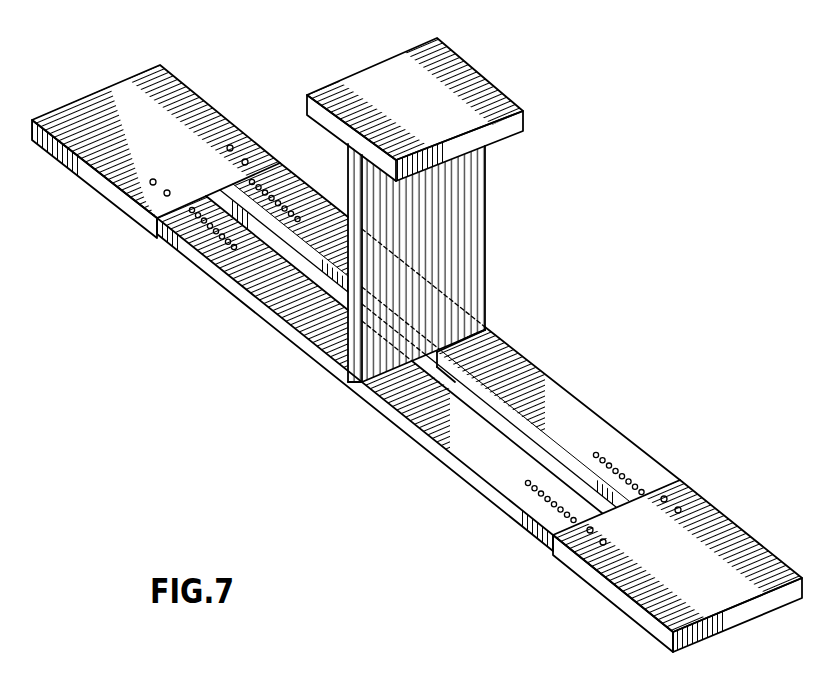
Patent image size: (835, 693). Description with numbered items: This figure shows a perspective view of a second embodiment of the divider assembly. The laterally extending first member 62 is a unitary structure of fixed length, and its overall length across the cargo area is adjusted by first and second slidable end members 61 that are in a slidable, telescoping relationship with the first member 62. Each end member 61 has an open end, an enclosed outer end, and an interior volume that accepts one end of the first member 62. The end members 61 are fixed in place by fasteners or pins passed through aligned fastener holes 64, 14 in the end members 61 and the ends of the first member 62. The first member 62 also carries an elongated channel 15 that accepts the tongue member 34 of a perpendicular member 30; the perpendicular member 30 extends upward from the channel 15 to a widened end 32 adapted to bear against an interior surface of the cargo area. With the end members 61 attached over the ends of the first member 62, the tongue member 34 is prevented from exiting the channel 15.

The fastener holes 14 is at (226, 245).
The elongated channel 15 is at (500, 431).
The perpendicular member 30 is at (528, 236).
The widened end 32 is at (495, 85).
The tongue element 34 is at (460, 378).
The slidable end member 61 is at (181, 108).
The laterally extending first member 62 is at (462, 522).
The fastener holes 64 is at (231, 145).